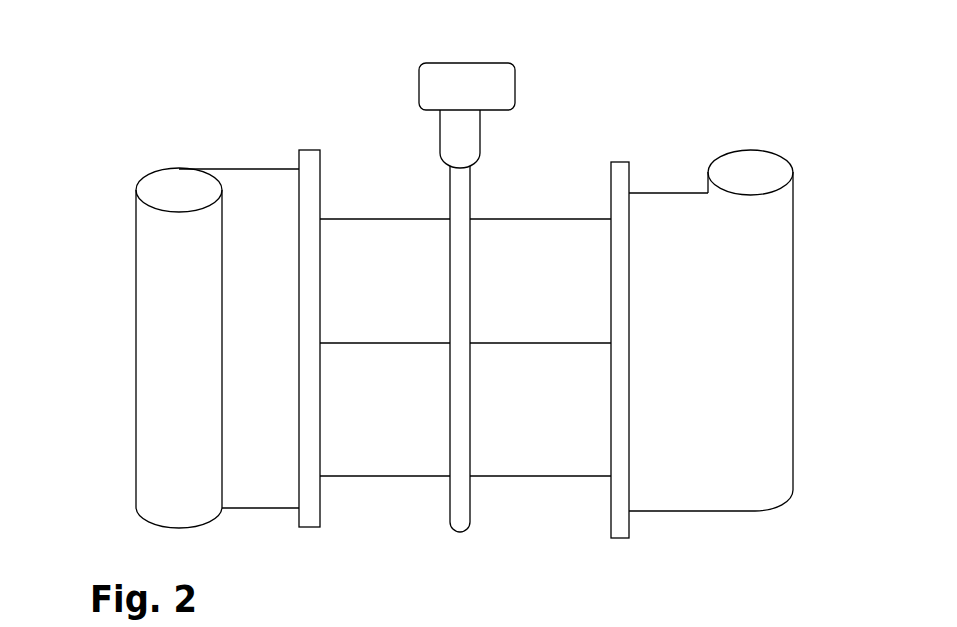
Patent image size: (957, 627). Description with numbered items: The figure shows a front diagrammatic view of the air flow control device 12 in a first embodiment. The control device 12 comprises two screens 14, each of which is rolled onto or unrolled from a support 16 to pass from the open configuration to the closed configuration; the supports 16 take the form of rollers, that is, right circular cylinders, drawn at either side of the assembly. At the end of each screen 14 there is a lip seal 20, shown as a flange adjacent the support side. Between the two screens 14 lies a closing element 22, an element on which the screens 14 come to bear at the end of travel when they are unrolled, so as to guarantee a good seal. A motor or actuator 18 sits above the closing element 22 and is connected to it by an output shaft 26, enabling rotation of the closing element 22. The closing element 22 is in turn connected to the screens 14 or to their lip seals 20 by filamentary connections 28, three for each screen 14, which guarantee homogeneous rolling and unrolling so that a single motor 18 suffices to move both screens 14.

The control device 12 is at (104, 263).
The screen 14 is at (247, 218).
The support 16 is at (185, 380).
The motor 18 is at (484, 92).
The lip seal 20 is at (308, 160).
The closing element 22 is at (460, 198).
The output shaft 26 is at (465, 140).
The filamentary connection 28 is at (372, 478).